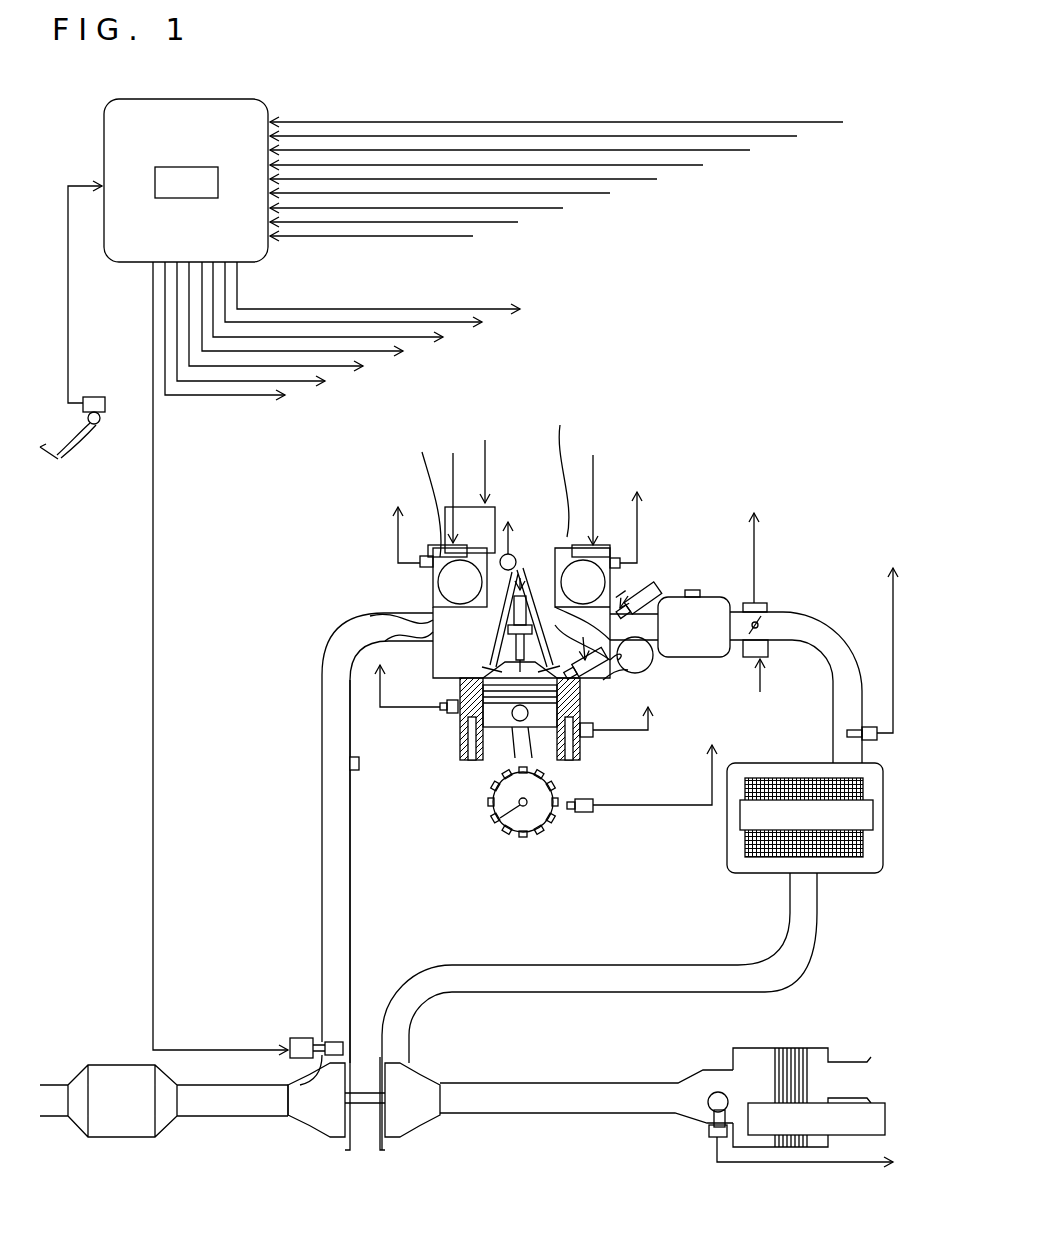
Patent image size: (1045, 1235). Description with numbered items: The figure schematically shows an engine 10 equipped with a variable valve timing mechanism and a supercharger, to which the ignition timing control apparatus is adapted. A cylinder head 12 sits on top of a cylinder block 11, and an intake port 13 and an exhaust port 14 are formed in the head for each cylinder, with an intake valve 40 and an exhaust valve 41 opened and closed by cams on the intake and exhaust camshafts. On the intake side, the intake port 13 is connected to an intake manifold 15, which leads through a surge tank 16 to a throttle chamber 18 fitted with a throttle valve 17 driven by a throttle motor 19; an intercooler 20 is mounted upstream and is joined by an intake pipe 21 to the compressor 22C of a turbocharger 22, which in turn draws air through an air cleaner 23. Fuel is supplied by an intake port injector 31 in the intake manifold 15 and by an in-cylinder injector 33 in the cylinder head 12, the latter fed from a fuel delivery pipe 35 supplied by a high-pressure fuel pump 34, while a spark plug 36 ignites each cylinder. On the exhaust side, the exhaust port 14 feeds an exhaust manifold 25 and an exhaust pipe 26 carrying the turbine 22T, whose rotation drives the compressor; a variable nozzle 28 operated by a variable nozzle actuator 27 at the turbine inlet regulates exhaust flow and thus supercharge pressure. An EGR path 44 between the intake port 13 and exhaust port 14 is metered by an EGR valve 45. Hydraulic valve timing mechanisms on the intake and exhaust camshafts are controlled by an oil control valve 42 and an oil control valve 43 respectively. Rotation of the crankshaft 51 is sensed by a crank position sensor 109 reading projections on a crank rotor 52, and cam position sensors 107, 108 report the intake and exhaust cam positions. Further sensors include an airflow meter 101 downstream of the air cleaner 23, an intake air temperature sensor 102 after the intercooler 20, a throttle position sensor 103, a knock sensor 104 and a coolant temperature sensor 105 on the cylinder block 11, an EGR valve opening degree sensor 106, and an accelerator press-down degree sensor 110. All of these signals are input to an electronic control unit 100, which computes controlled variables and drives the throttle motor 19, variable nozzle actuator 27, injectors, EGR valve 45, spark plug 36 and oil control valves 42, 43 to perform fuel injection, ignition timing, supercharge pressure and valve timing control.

The engine 10 is at (482, 795).
The cylinder block 11 is at (467, 730).
The cylinder head 12 is at (433, 622).
The intake port 13 is at (553, 687).
The exhaust port 14 is at (372, 640).
The intake manifold 15 is at (652, 623).
The surge tank 16 is at (710, 606).
The throttle valve 17 is at (768, 618).
The throttle chamber 18 is at (738, 617).
The throttle motor 19 is at (853, 590).
The intercooler 20 is at (868, 878).
The intake pipe 21 is at (548, 995).
The turbocharger 22 is at (386, 943).
The turbine 22T is at (310, 1137).
The compressor 22C is at (412, 1107).
The air cleaner 23 is at (757, 1055).
The exhaust manifold 25 is at (358, 650).
The exhaust pipe 26 is at (322, 918).
The variable nozzle actuator 27 is at (300, 1037).
The variable nozzle 28 is at (335, 1040).
The intake port injector 31 is at (658, 588).
The in-cylinder injector 33 is at (640, 747).
The high-pressure fuel pump 34 is at (463, 518).
The fuel delivery pipe 35 is at (645, 667).
The spark plug 36 is at (430, 796).
The intake valve 40 is at (548, 585).
The exhaust valve 41 is at (433, 670).
The oil control valve 42 is at (600, 537).
The oil control valve 43 is at (432, 556).
The EGR path 44 is at (529, 572).
The EGR valve 45 is at (433, 591).
The crankshaft 51 is at (499, 820).
The crank rotor 52 is at (528, 832).
The electronic control unit 100 is at (270, 101).
The airflow meter 101 is at (653, 1162).
The intake air temperature sensor 102 is at (866, 722).
The throttle position sensor 103 is at (763, 613).
The knock sensor 104 is at (607, 768).
The coolant temperature sensor 105 is at (405, 728).
The EGR valve opening degree sensor 106 is at (513, 548).
The cam position sensor 107 is at (624, 556).
The cam position sensor 108 is at (357, 545).
The crank position sensor 109 is at (585, 862).
The accelerator press-down degree sensor 110 is at (98, 396).